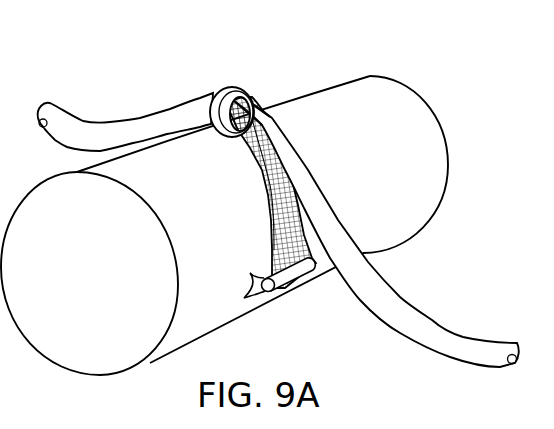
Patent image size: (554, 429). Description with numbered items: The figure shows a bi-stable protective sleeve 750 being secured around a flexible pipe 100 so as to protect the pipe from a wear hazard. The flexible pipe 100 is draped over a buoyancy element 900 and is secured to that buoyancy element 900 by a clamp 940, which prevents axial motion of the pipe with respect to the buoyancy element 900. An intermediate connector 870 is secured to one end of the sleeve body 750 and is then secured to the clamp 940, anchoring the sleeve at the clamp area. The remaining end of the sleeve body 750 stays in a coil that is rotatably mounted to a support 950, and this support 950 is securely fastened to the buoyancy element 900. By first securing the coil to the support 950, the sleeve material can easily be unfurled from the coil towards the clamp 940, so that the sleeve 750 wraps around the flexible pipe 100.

The flexible pipe 100 is at (147, 126).
The protective sleeve 750 is at (263, 165).
The intermediate connector 870 is at (252, 91).
The buoyancy element 900 is at (423, 120).
The clamp 940 is at (230, 86).
The support 950 is at (273, 300).